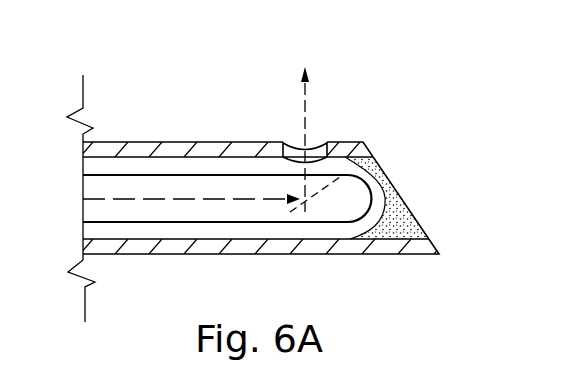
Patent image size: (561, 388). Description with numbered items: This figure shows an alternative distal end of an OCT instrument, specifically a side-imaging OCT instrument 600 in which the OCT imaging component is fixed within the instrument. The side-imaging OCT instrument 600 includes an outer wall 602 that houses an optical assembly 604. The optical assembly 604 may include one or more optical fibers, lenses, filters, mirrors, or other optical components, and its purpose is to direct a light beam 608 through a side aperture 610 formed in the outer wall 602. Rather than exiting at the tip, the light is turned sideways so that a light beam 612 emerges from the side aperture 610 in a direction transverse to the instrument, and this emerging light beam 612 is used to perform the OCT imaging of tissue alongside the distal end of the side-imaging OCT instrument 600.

The side-imaging OCT instrument 600 is at (183, 74).
The outer wall 602 is at (312, 246).
The optical assembly 604 is at (177, 223).
The light beam 608 is at (150, 197).
The side aperture 610 is at (315, 149).
The light beam 612 is at (302, 110).